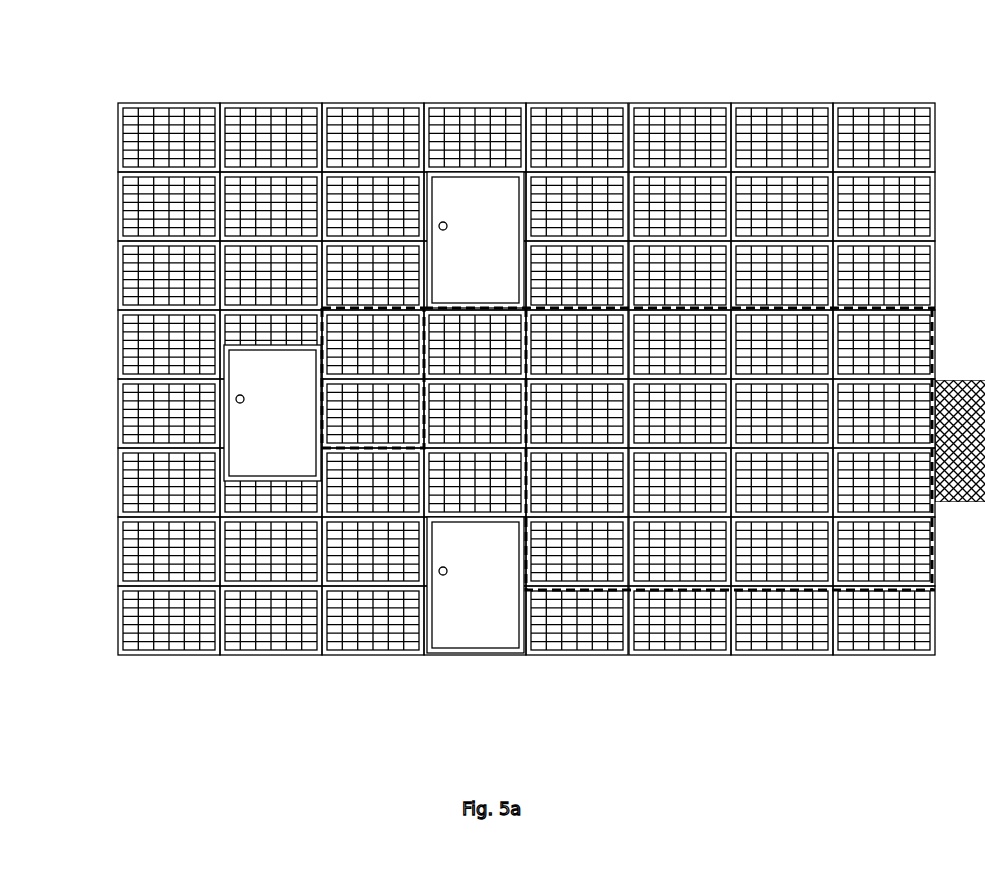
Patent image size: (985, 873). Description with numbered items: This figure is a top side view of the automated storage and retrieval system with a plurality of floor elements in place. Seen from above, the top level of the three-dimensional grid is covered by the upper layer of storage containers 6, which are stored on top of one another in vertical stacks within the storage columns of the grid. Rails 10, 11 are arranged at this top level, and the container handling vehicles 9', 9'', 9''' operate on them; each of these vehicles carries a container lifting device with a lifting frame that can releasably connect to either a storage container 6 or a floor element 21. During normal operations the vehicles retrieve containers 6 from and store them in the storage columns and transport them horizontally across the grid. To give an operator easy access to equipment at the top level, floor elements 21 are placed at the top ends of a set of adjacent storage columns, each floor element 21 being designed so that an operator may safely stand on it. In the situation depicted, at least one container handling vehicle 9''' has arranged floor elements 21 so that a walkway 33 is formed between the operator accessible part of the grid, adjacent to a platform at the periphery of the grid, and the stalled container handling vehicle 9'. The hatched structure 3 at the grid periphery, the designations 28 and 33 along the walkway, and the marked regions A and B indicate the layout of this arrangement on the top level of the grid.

The wall / hatched structure 3 is at (983, 527).
The storage container 6 is at (772, 630).
The container handling vehicle 9' is at (193, 413).
The container handling vehicle 9'' is at (475, 622).
The container handling vehicle 9''' is at (397, 175).
The rail 10 is at (223, 560).
The rail 11 is at (158, 508).
The floor element 21 is at (883, 478).
The grid element 28 is at (680, 578).
The walkway 33 is at (641, 463).
The region A is at (372, 449).
The region B is at (600, 591).